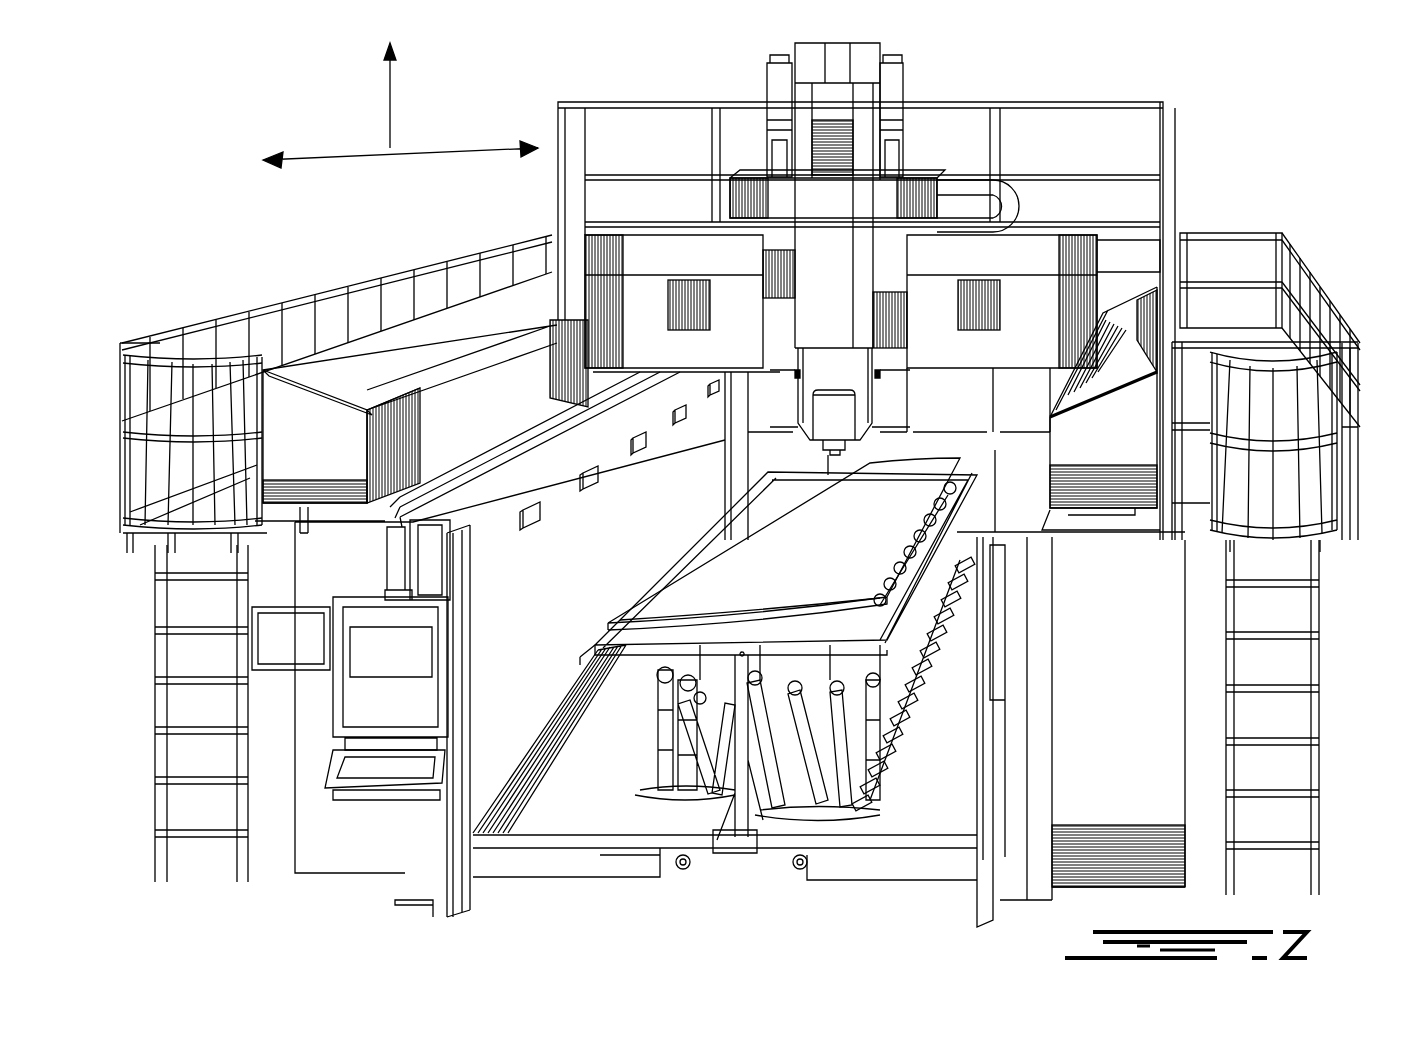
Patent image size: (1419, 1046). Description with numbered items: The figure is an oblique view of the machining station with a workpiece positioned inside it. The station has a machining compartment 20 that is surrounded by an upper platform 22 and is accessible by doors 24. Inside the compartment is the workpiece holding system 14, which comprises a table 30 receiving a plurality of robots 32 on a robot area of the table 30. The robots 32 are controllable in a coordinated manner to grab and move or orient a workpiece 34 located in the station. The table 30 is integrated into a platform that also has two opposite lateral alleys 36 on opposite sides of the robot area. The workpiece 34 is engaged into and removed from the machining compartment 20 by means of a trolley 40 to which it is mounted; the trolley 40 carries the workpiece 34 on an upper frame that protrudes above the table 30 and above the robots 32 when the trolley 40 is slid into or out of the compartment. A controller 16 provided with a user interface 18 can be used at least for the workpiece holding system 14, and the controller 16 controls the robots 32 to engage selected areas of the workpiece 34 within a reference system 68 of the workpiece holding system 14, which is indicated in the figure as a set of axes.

The workpiece holding system 14 is at (597, 617).
The controller 16 is at (363, 700).
The user interface 18 is at (363, 772).
The machining compartment 20 is at (706, 465).
The upper platform 22 is at (225, 320).
The doors 24 is at (452, 888).
The table 30 is at (573, 735).
The robots 32 is at (838, 820).
The workpiece 34 is at (742, 568).
The lateral alleys 36 is at (565, 797).
The trolley 40 is at (742, 803).
The reference system 68 is at (390, 148).